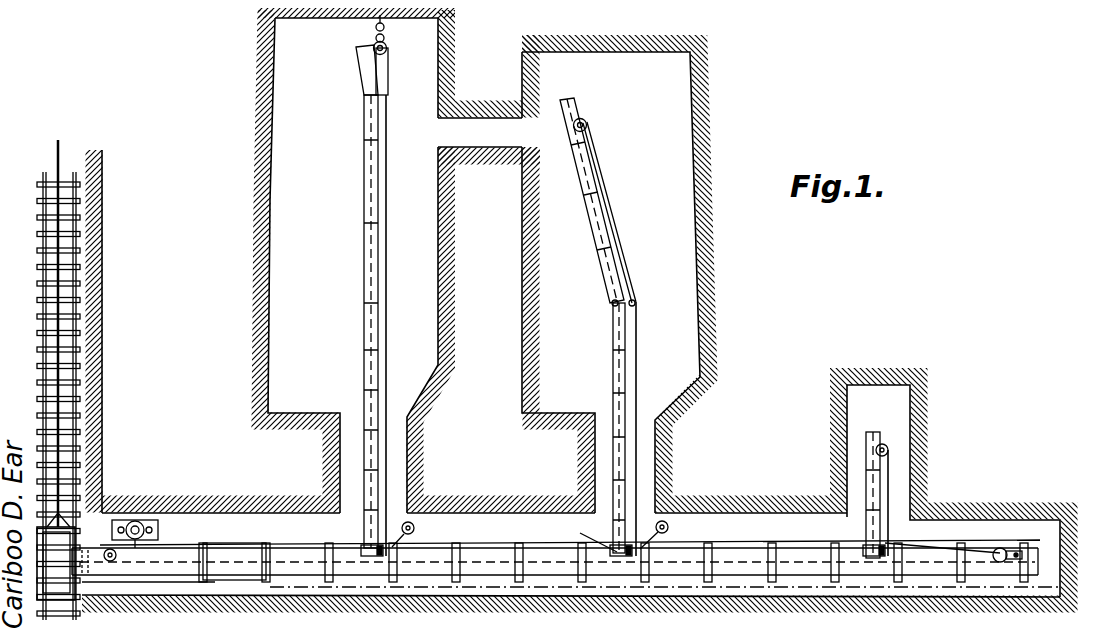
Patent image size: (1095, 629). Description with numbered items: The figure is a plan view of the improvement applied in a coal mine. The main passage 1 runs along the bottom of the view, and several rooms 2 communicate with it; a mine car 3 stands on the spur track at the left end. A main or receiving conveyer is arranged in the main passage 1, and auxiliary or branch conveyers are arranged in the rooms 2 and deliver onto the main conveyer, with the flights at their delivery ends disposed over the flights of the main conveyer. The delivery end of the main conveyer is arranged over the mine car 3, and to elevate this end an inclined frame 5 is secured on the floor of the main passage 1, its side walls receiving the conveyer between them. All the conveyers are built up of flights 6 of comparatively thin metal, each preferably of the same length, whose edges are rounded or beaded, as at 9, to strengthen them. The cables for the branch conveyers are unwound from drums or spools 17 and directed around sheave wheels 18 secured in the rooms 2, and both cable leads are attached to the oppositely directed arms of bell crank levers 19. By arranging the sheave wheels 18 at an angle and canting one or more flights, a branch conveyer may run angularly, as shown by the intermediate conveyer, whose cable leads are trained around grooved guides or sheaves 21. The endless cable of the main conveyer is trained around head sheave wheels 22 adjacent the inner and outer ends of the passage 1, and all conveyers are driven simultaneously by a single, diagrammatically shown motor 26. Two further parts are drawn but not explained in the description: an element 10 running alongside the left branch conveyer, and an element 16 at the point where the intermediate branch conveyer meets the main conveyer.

The main passage 1 is at (312, 589).
The rooms 2 is at (541, 313).
The mine car 3 is at (92, 500).
The inclined frame 5 is at (182, 585).
The flights 6 is at (365, 276).
The rounded edges 9 is at (1063, 600).
The supporting rod 10 is at (388, 351).
The pipe coupling 16 is at (586, 537).
The drums or spools 17 is at (415, 528).
The sheave wheels 18 is at (387, 46).
The bell crank levers 19 is at (384, 546).
The grooved guides or sheaves 21 is at (636, 303).
The head sheave wheels 22 is at (110, 550).
The motor 26 is at (158, 530).